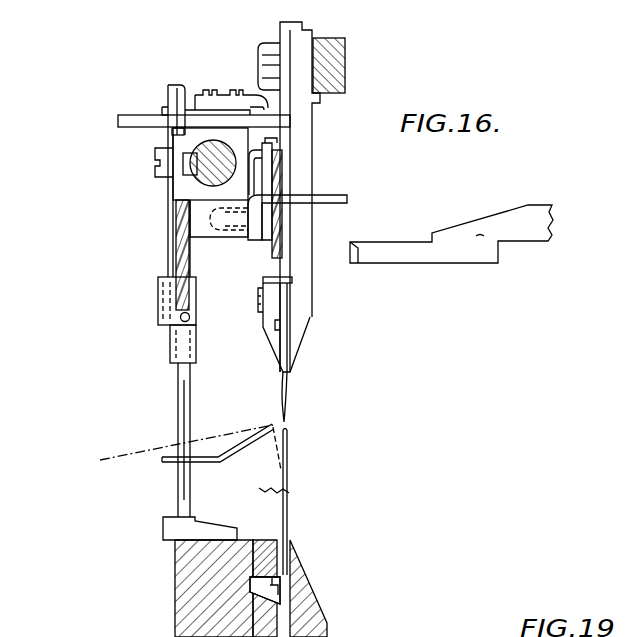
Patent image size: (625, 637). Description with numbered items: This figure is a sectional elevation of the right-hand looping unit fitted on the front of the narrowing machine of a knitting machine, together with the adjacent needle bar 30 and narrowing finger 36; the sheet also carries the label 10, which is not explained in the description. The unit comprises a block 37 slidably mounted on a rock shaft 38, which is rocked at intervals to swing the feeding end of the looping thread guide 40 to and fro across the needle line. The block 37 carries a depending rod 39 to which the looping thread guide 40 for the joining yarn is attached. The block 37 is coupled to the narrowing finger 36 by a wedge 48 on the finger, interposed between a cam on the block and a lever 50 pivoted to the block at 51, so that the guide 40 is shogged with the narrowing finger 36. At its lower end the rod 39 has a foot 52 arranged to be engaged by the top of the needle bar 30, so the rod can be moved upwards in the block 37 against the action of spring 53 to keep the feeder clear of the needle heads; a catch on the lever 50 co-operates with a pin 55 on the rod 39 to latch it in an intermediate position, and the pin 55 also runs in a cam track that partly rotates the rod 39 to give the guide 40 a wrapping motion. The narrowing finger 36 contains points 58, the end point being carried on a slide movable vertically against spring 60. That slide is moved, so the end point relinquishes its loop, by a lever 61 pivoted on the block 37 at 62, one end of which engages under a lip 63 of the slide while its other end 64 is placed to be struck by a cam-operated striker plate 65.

The thread or wire 10 is at (285, 513).
The needle bar 30 is at (238, 611).
The narrowing finger 36 is at (300, 307).
The block 37 is at (187, 185).
The rock shaft 38 is at (190, 149).
The depending rod 39 is at (178, 395).
The looping thread guide 40 is at (216, 462).
The wedge 48 is at (145, 121).
The lever 50 is at (171, 95).
The pivot 51 is at (155, 172).
The foot 52 is at (172, 532).
The spring 53 is at (173, 257).
The pin 55 is at (162, 311).
The points 58 is at (288, 383).
The spring 60 is at (270, 247).
The lever 61 is at (254, 167).
The pivot 62 is at (268, 228).
The lip 63 is at (280, 138).
The lever end 64 is at (349, 199).
The striker plate 65 is at (452, 250).